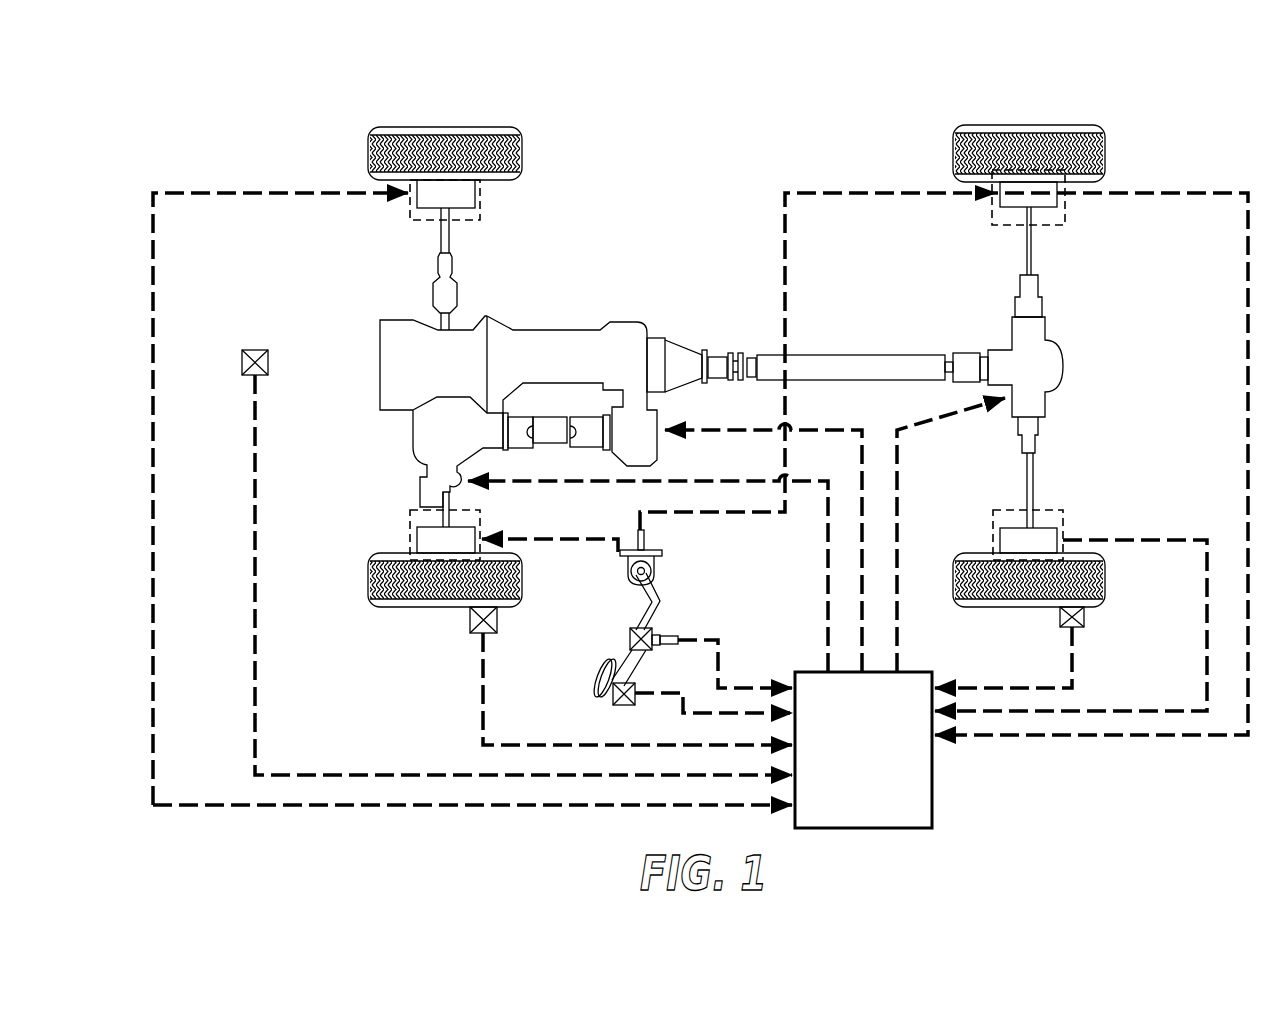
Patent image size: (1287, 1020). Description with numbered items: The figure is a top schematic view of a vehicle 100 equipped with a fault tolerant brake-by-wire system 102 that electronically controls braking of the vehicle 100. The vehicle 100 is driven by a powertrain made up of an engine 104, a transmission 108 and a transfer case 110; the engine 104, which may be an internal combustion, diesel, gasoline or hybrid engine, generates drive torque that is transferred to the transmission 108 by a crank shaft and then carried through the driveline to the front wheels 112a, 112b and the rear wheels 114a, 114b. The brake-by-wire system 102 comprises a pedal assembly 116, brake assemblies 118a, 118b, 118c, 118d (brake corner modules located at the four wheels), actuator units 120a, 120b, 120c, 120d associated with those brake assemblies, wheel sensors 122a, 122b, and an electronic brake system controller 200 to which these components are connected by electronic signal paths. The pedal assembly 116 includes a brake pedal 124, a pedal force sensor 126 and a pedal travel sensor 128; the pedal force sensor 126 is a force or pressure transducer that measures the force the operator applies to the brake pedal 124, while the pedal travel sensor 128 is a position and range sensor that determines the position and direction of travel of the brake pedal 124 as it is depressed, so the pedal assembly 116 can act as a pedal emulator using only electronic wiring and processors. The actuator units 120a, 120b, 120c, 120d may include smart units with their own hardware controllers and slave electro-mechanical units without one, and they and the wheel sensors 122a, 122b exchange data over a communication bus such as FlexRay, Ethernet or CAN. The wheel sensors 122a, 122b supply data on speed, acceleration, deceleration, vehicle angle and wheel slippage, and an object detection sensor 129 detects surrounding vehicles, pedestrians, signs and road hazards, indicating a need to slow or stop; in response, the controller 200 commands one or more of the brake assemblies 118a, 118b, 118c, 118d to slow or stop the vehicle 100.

The vehicle 100 is at (310, 145).
The fault tolerant BBW system 102 is at (962, 784).
The engine 104 is at (376, 320).
The transmission 108 is at (569, 320).
The transfer case 110 is at (630, 315).
The front wheel 112a is at (425, 612).
The front wheel 112b is at (420, 116).
The rear wheel 114a is at (1025, 613).
The rear wheel 114b is at (1022, 115).
The pedal assembly 116 is at (670, 592).
The brake assembly 118a is at (403, 527).
The brake assembly 118b is at (488, 203).
The brake assembly 118c is at (1072, 208).
The brake assembly 118d is at (982, 527).
The actuator unit 120a is at (455, 540).
The actuator unit 120b is at (460, 202).
The actuator unit 120c is at (1040, 202).
The actuator unit 120d is at (1040, 540).
The wheel sensor 122a is at (477, 636).
The wheel sensor 122b is at (1065, 624).
The brake pedal 124 is at (600, 672).
The pedal force sensor 126 is at (628, 638).
The pedal travel sensor 128 is at (612, 700).
The object detection sensor 129 is at (245, 378).
The electronic brake system (EBS) controller 200 is at (880, 763).